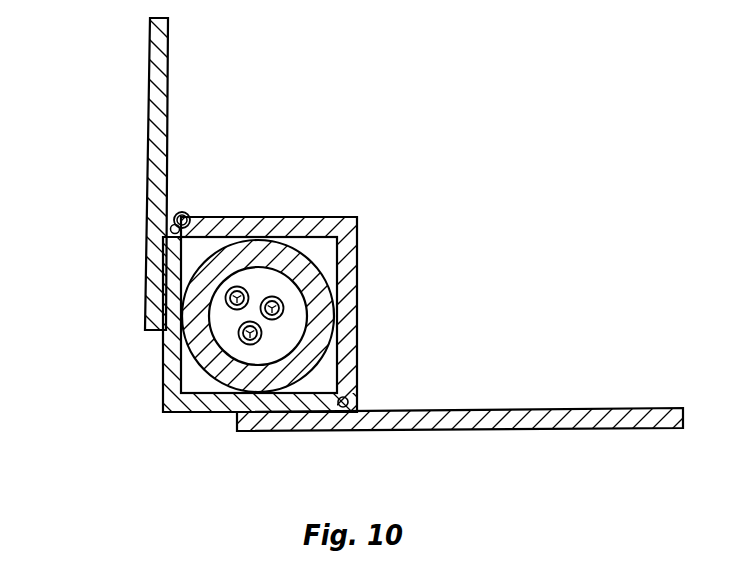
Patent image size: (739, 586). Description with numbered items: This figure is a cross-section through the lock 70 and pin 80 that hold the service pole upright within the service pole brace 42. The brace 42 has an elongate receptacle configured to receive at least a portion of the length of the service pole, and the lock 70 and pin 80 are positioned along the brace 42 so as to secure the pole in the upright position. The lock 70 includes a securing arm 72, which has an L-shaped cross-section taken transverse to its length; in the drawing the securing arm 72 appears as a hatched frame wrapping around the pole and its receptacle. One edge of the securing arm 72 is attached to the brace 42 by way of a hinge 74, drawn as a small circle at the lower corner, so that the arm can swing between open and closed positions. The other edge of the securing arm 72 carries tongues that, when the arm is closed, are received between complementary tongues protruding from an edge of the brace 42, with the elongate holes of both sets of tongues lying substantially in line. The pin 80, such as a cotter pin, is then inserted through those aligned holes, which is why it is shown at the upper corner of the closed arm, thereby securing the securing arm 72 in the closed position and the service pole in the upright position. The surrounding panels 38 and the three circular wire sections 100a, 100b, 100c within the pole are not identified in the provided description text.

The wall panel 38 is at (157, 92).
The lock 70 is at (344, 110).
The securing arm 72 is at (343, 262).
The service pole brace 42 is at (165, 388).
The pin 80 is at (190, 213).
The hinge 74 is at (350, 398).
The contact terminal 100a is at (226, 296).
The contact terminal 100b is at (241, 343).
The contact terminal 100c is at (283, 317).